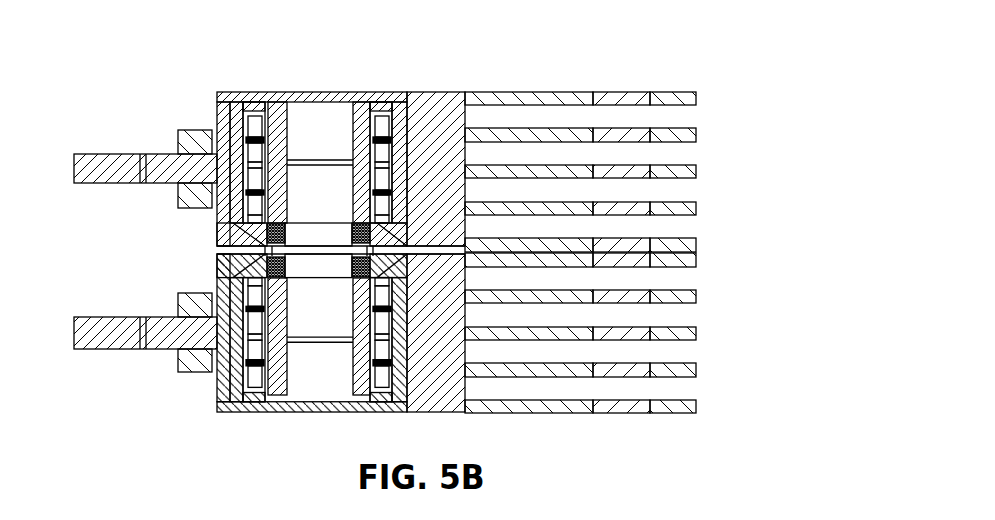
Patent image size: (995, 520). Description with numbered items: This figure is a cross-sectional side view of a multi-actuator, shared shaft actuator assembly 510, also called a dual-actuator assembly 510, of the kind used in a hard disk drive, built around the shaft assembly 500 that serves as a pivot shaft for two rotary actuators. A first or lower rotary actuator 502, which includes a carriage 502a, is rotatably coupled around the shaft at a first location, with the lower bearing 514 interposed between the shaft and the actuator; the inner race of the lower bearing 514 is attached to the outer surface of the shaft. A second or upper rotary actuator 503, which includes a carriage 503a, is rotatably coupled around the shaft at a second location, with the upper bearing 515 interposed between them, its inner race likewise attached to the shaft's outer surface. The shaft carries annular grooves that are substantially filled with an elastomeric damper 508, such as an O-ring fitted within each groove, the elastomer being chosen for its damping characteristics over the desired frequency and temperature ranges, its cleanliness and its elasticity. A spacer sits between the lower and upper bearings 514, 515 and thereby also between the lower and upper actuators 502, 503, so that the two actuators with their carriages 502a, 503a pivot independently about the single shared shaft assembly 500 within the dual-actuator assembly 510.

The shaft assembly 500 is at (287, 103).
The lower rotary actuator 502 is at (160, 350).
The carriage 502a is at (443, 405).
The upper rotary actuator 503 is at (162, 153).
The carriage 503a is at (448, 92).
The elastomeric damper 508 is at (353, 230).
The multi-actuator, shared shaft actuator assembly 510 is at (455, 44).
The lower bearing 514 is at (363, 400).
The upper bearing 515 is at (350, 122).